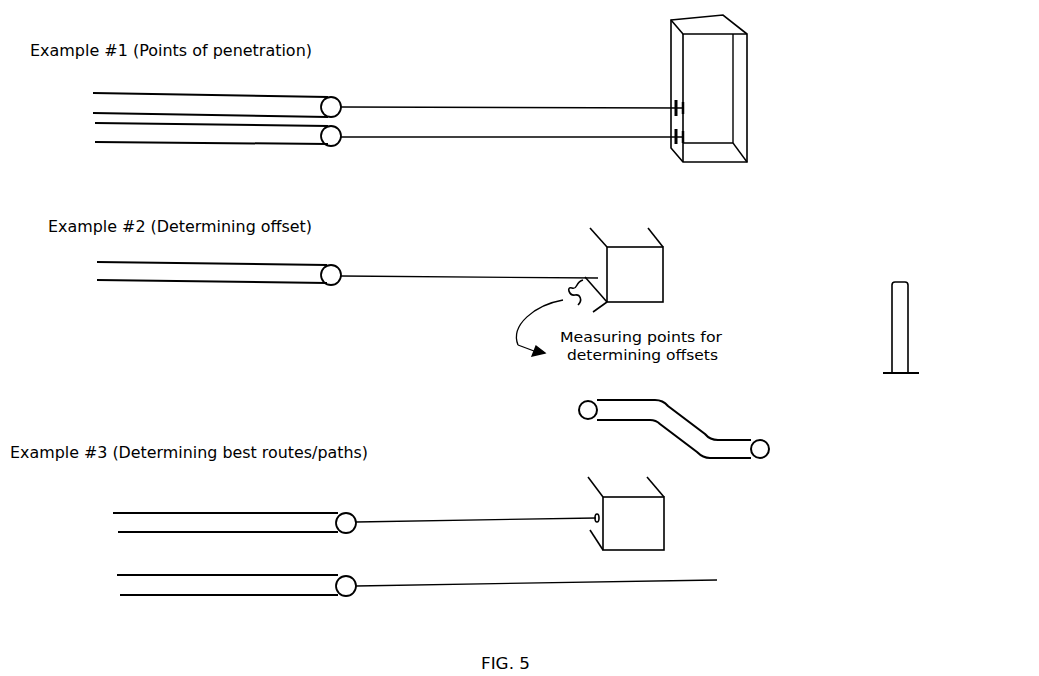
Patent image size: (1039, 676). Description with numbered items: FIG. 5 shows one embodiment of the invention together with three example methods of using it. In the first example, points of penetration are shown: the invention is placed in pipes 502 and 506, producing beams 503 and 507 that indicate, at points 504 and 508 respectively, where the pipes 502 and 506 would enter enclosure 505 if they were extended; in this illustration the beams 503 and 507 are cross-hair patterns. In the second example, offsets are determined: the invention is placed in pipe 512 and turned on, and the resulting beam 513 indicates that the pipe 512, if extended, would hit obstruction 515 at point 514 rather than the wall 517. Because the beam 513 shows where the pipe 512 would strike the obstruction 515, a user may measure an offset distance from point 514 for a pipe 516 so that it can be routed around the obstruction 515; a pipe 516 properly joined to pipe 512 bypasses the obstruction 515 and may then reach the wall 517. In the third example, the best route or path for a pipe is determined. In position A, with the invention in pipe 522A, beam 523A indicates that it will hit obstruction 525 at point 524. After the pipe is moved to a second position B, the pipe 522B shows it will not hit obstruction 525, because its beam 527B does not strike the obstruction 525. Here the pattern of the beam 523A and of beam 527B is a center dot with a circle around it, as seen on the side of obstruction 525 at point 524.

The pipe 502 is at (217, 97).
The beam 503 is at (512, 97).
The point of penetration 504 is at (656, 93).
The enclosure 505 is at (716, 109).
The pipe 506 is at (218, 144).
The beam 507 is at (512, 146).
The point of penetration 508 is at (650, 151).
The pipe 512 is at (219, 264).
The beam 513 is at (469, 264).
The point 514 is at (580, 264).
The obstruction 515 is at (676, 270).
The pipe 516 is at (674, 429).
The wall 517 is at (900, 344).
The pipe 522A is at (234, 513).
The pipe 522B is at (236, 576).
The beam 523A is at (476, 512).
The point 524 is at (588, 503).
The obstruction 525 is at (675, 513).
The beam 527B is at (536, 575).